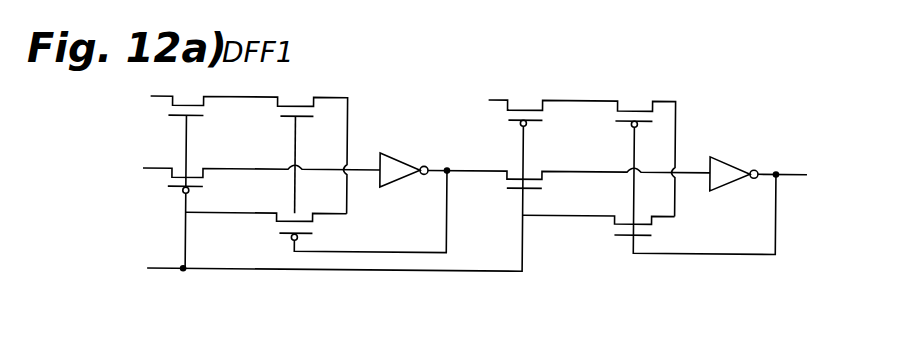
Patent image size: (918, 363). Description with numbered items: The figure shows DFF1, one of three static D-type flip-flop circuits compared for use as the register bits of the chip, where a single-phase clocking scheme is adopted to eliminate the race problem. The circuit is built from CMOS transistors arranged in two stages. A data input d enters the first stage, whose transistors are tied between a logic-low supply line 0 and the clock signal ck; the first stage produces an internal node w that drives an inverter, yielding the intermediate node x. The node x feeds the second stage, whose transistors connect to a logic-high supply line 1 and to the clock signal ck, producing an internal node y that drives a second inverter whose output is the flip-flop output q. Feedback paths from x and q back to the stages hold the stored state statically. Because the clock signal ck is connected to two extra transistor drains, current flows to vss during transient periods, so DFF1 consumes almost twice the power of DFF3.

The logic 0 (ground) supply line 0 is at (236, 151).
The logic 1 supply line 1 is at (573, 152).
The data input d is at (253, 169).
The clock signal ck is at (319, 203).
The internal node w is at (395, 166).
The internal node x is at (569, 162).
The internal node y is at (719, 167).
The output q is at (790, 170).